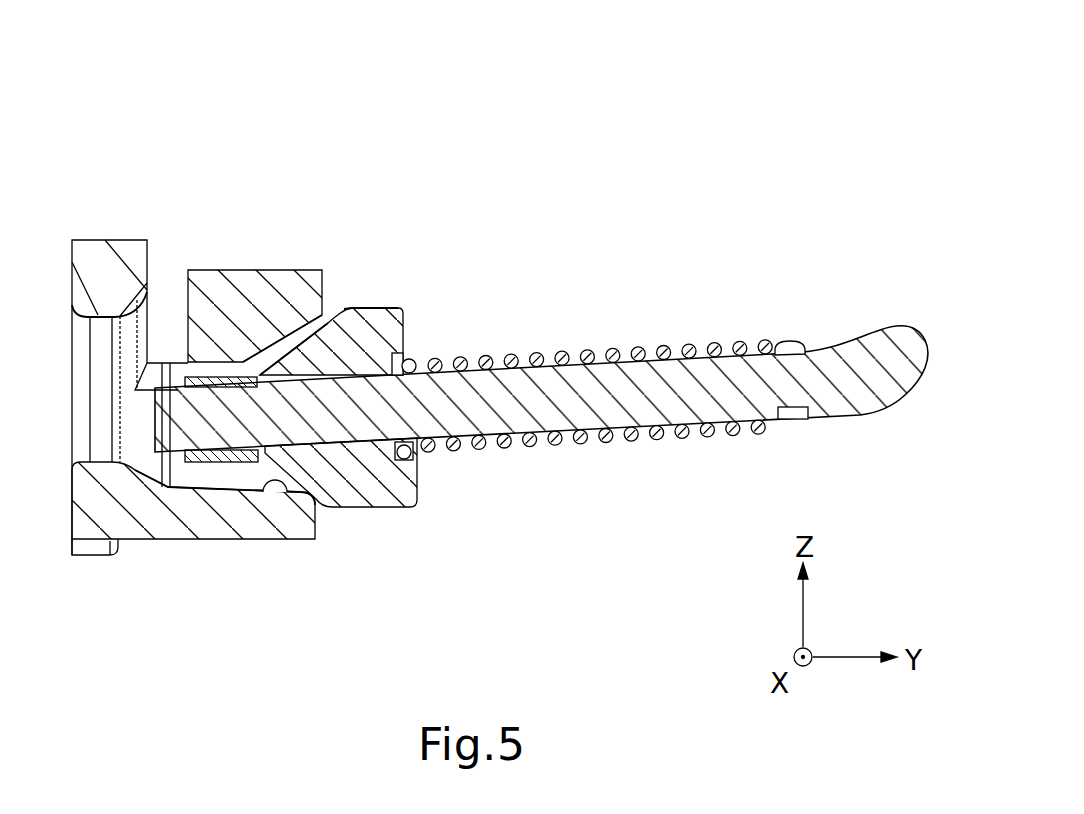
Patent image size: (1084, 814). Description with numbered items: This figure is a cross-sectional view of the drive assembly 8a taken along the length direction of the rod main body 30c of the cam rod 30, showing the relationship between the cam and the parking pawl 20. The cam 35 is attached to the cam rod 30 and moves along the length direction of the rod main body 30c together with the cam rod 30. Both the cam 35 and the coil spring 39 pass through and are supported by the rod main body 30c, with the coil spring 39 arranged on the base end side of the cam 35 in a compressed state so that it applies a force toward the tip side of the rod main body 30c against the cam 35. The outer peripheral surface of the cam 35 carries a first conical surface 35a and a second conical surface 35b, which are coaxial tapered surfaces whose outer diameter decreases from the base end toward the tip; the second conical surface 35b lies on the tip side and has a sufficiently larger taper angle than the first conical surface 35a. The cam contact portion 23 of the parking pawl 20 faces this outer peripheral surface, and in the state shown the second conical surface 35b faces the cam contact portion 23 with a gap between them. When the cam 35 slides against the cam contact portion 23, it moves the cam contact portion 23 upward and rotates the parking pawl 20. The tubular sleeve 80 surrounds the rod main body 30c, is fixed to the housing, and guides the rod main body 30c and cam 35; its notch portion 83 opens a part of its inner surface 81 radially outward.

The drive assembly 8a is at (772, 122).
The parking pawl 20 is at (237, 258).
The cam contact portion 23 is at (316, 335).
The cam rod 30 is at (844, 342).
The rod main body 30c is at (650, 392).
The cam 35 is at (402, 308).
The first conical surface 35a is at (378, 305).
The second conical surface 35b is at (285, 335).
The coil spring 39 is at (658, 432).
The sleeve 80 is at (191, 552).
The inner surface 81 is at (283, 492).
The notch portion 83 is at (149, 360).